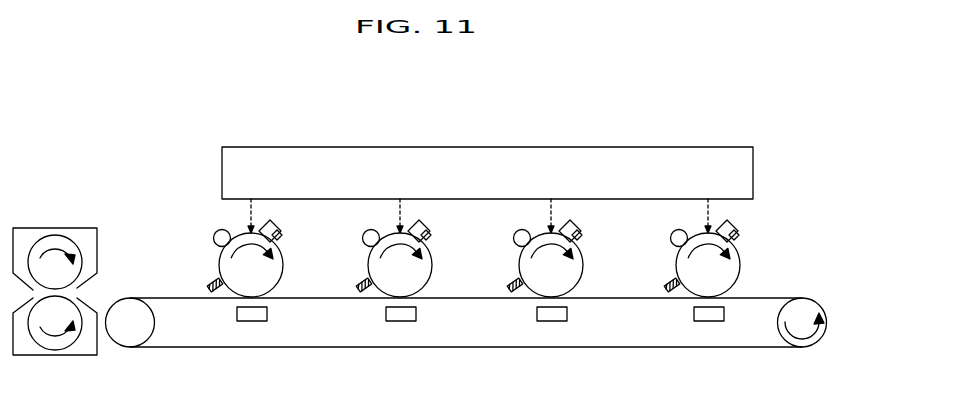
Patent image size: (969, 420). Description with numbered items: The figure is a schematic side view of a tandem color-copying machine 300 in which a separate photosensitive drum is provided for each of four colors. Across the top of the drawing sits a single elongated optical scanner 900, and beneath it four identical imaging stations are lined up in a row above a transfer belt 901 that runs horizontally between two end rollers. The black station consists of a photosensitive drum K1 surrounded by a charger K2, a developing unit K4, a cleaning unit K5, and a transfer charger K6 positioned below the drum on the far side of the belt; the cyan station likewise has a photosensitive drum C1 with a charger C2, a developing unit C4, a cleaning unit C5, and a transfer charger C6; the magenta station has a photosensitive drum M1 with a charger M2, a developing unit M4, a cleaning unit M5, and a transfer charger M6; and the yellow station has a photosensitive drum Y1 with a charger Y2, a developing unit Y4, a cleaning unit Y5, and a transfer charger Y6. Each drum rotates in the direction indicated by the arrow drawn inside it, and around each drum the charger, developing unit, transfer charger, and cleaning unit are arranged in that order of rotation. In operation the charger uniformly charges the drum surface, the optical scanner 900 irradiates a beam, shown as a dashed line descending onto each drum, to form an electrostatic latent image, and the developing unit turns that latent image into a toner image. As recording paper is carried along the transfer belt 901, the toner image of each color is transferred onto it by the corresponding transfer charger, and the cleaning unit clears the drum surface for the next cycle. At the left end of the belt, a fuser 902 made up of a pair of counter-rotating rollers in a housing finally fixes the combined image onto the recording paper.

The tandem color-copying machine 300 is at (648, 101).
The optical scanner 900 is at (724, 133).
The transfer belt 901 is at (683, 352).
The fuser 902 is at (66, 228).
The photosensitive drum K1 is at (281, 275).
The charger K2 is at (218, 232).
The developing unit K4 is at (282, 232).
The cleaning unit K5 is at (211, 281).
The transfer charger K6 is at (268, 316).
The photosensitive drum C1 is at (430, 275).
The charger C2 is at (367, 232).
The developing unit C4 is at (431, 232).
The cleaning unit C5 is at (360, 281).
The transfer charger C6 is at (417, 316).
The photosensitive drum M1 is at (581, 275).
The charger M2 is at (518, 232).
The developing unit M4 is at (582, 232).
The cleaning unit M5 is at (511, 281).
The transfer charger M6 is at (568, 316).
The photosensitive drum Y1 is at (738, 275).
The charger Y2 is at (675, 232).
The developing unit Y4 is at (739, 232).
The cleaning unit Y5 is at (668, 281).
The transfer charger Y6 is at (725, 316).